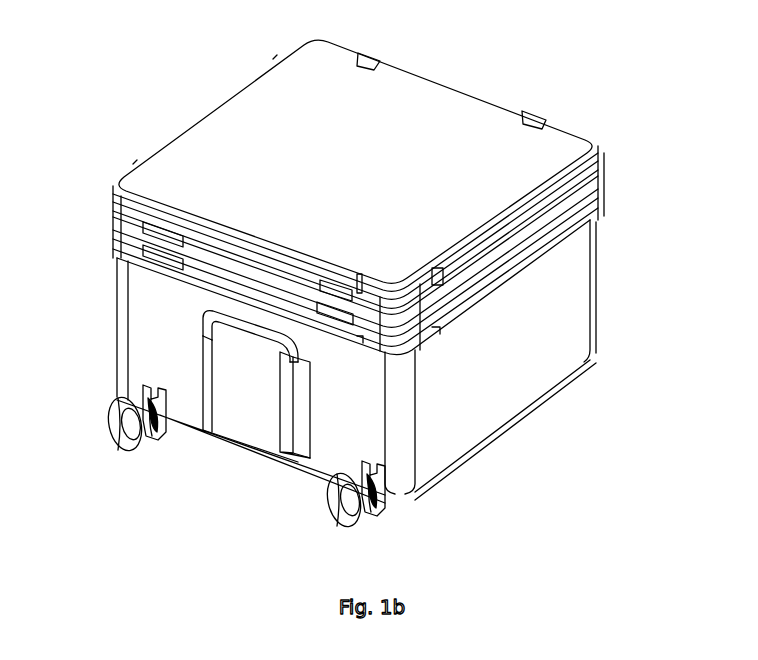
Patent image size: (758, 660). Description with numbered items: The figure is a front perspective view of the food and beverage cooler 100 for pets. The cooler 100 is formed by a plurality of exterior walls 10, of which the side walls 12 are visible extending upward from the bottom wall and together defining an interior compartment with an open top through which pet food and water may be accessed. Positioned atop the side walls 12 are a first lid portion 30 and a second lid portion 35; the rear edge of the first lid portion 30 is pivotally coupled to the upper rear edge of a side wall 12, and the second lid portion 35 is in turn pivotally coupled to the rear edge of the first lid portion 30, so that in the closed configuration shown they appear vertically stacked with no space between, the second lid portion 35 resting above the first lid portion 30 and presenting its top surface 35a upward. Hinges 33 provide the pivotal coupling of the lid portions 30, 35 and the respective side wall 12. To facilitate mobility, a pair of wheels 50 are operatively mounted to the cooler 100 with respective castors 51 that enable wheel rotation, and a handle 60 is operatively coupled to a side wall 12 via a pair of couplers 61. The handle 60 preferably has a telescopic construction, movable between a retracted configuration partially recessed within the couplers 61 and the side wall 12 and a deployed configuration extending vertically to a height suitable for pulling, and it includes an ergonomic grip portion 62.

The food and beverage cooler 100 is at (185, 100).
The exterior walls 10 is at (552, 413).
The side walls 12 is at (363, 378).
The first lid portion 30 is at (572, 205).
The hinges 33 is at (320, 309).
The second lid portion 35 is at (570, 183).
The top surface 35a is at (382, 174).
The wheels 50 is at (123, 432).
The castors 51 is at (148, 434).
The handle 60 is at (283, 343).
The couplers 61 is at (283, 434).
The grip portion 62 is at (250, 322).